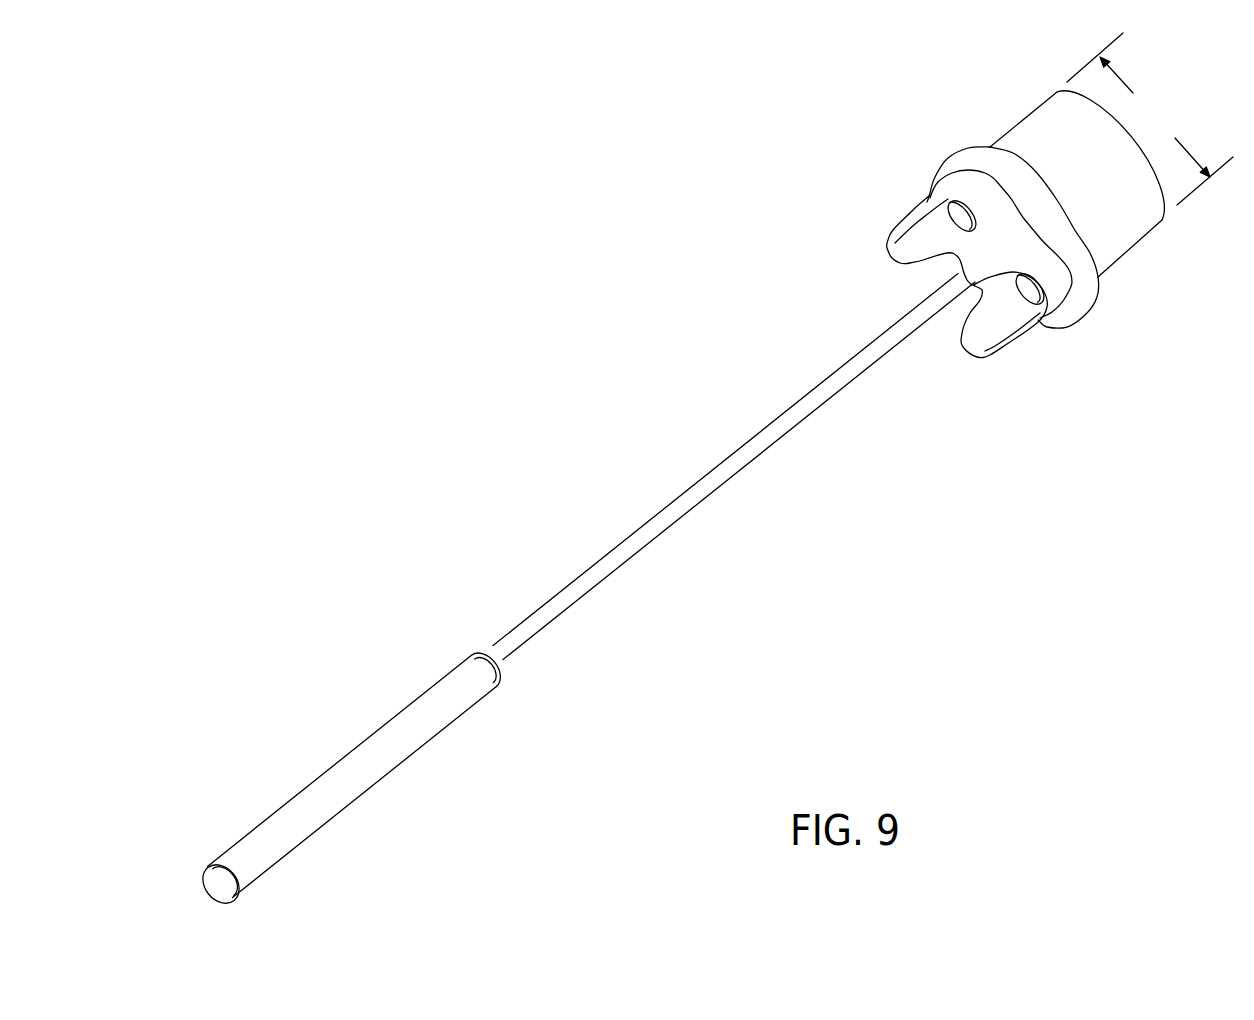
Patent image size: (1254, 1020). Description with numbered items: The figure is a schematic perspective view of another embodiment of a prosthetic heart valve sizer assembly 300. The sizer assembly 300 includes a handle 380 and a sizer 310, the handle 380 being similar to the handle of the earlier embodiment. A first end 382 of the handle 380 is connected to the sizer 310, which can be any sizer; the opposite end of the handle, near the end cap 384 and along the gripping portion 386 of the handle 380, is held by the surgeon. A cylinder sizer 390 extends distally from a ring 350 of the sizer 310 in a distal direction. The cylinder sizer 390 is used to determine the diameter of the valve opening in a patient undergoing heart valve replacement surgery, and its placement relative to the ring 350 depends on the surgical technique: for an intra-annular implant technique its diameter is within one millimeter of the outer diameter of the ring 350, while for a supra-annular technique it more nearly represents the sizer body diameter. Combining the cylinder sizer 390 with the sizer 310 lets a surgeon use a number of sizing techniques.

The prosthetic heart valve sizer assembly 300 is at (458, 408).
The sizer 310 is at (957, 119).
The ring 350 is at (1083, 288).
The cylinder sizer 390 is at (1127, 230).
The handle 380 is at (486, 612).
The first end 382 is at (944, 300).
The end cap 384 is at (257, 884).
The handle 386 is at (350, 760).